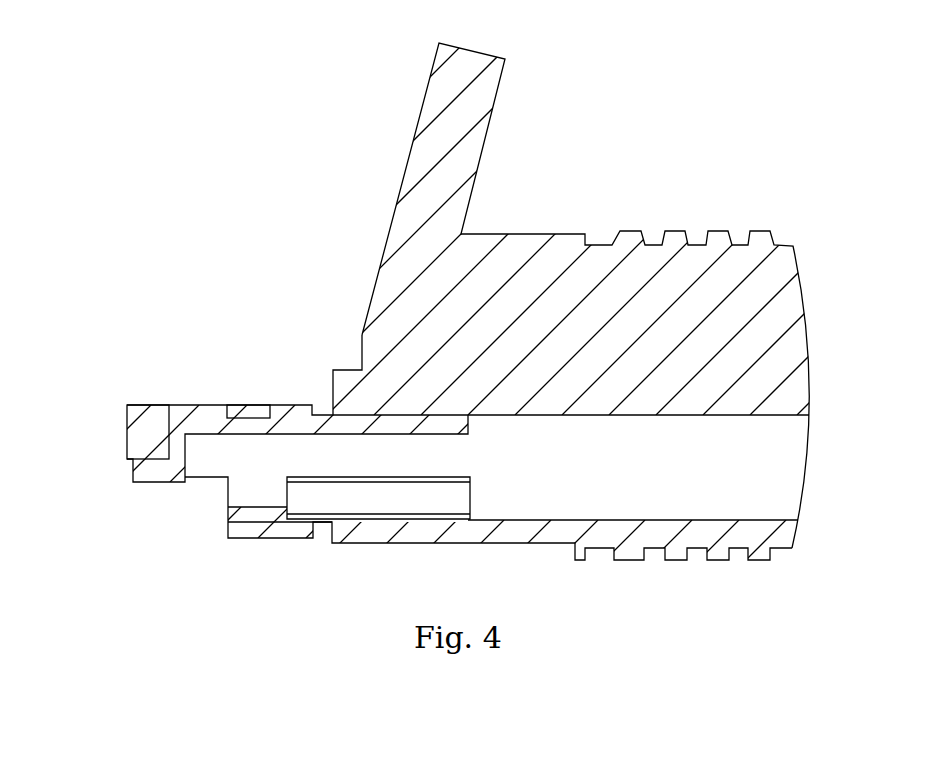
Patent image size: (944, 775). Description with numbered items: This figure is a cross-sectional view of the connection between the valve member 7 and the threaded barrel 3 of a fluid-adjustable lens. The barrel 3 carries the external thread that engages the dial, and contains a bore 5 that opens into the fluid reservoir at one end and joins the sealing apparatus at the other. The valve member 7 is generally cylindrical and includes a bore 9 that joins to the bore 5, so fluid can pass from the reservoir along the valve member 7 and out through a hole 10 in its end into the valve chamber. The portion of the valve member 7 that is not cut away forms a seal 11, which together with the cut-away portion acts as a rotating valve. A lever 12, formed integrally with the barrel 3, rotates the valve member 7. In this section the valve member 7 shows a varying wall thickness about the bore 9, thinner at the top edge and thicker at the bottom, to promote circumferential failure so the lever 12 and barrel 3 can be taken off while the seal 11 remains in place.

The threaded barrel 3 is at (696, 242).
The bore 5 is at (670, 497).
The valve member 7 is at (209, 404).
The bore 9 is at (372, 497).
The hole 10 is at (217, 488).
The seal 11 is at (128, 434).
The lever 12 is at (493, 110).